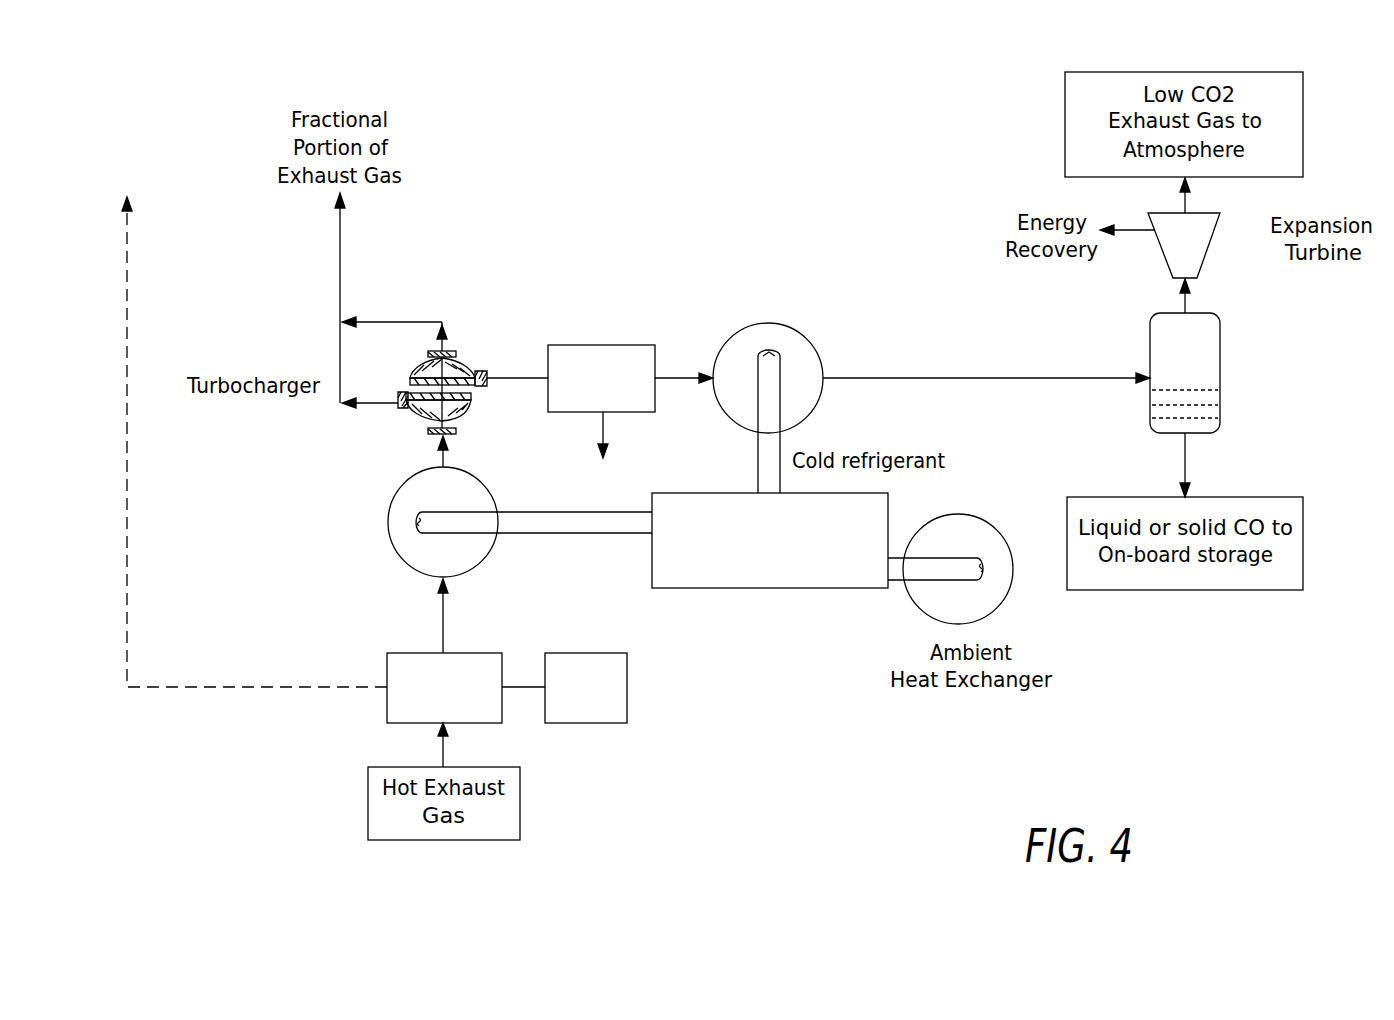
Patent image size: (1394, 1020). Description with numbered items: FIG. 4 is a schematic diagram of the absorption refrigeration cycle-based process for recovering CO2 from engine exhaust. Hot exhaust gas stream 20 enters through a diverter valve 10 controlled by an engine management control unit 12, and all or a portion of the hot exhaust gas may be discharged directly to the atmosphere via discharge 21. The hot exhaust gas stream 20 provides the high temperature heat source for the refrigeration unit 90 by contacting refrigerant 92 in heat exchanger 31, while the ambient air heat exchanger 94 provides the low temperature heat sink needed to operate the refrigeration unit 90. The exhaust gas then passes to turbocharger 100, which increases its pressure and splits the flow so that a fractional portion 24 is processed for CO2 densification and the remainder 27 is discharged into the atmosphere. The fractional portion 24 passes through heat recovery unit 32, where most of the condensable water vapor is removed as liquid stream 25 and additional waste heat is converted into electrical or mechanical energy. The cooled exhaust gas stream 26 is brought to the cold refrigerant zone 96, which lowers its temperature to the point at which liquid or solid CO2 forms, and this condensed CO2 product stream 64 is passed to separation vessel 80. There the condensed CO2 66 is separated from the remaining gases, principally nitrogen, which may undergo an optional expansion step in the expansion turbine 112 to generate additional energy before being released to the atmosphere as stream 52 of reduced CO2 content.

The diverter valve 10 is at (485, 712).
The engine management control unit 12 is at (597, 694).
The hot exhaust gas stream 20 is at (443, 633).
The discharge 21 is at (242, 442).
The fractional portion of exhaust gas 24 is at (507, 372).
The liquid water stream 25 is at (603, 418).
The cooled exhaust gas stream 26 is at (665, 377).
The remainder of exhaust gas 27 is at (340, 256).
The heat exchanger 31 is at (393, 508).
The heat recovery unit 32 is at (597, 345).
The exhaust gas stream of reduced CO2 content 52 is at (1188, 206).
The condensed CO2 product stream 64 is at (980, 376).
The condensed CO2 66 is at (1188, 463).
The separation vessel 80 is at (1208, 358).
The refrigeration unit 90 is at (787, 588).
The refrigerant 92 is at (591, 533).
The ambient air heat exchanger 94 is at (980, 538).
The cold refrigerant zone 96 is at (800, 396).
The turbocharger 100 is at (420, 367).
The expansion turbine 112 is at (1196, 277).